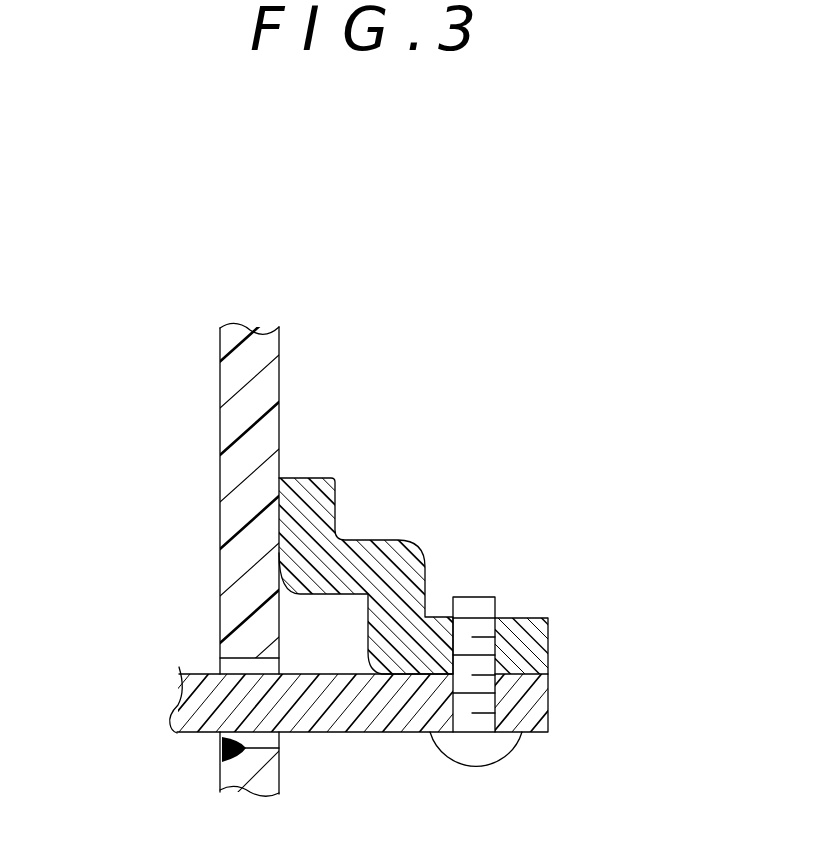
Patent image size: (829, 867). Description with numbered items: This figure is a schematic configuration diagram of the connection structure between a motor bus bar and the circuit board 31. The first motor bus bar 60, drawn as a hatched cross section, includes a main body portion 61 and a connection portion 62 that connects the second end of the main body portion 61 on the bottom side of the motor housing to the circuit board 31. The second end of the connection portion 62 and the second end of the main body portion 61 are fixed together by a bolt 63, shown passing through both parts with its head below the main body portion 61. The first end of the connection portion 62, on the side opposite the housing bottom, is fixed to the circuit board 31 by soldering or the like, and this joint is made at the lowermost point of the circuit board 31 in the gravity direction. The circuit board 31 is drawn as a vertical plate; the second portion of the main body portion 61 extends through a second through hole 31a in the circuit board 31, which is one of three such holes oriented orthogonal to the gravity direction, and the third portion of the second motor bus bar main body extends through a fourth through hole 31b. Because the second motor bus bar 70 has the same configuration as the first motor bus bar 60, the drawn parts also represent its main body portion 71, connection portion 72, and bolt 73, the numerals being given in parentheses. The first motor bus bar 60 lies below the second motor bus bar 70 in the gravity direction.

The circuit board 31 is at (228, 569).
The second through hole 31a is at (154, 761).
The fourth through hole 31b is at (222, 746).
The first motor bus bar 60 is at (356, 616).
The second motor bus bar 70 is at (356, 616).
The main body portion 61 is at (361, 728).
The main body portion 71 is at (352, 732).
The connection portion 62 is at (356, 575).
The connection portion 72 is at (424, 586).
The bolt 63 is at (491, 711).
The bolt 73 is at (472, 762).